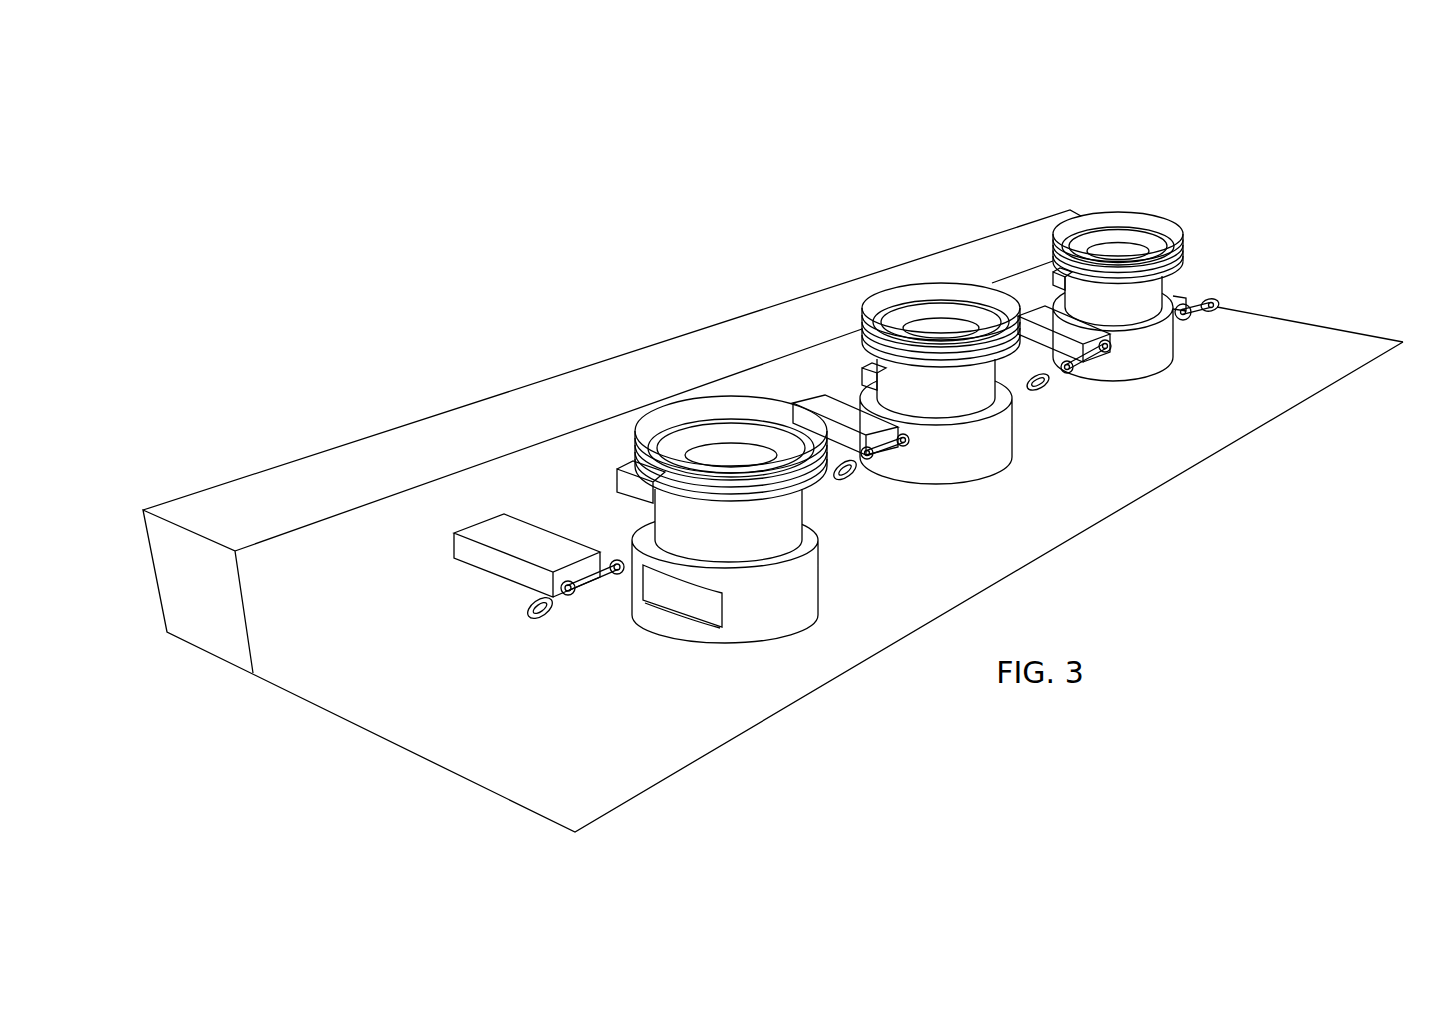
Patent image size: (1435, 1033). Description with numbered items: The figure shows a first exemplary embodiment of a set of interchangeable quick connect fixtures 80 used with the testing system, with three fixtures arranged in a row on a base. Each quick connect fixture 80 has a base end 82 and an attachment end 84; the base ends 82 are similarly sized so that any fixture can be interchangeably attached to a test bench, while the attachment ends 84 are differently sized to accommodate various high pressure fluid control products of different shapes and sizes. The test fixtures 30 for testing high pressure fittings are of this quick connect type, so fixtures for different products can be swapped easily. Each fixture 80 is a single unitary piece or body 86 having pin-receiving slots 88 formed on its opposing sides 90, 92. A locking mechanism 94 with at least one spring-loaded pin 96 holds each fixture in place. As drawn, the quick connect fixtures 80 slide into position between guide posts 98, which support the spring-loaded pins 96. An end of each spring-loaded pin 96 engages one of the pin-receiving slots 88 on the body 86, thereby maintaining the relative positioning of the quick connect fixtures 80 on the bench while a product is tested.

The interchangeable quick connect fixture 80 is at (896, 130).
The attachment end 84 is at (613, 385).
The test fixture for testing high pressure fittings 30 is at (679, 385).
The opposing side 92 is at (752, 380).
The base end 82 is at (682, 656).
The body 86 is at (732, 635).
The pin-receiving slot 88 is at (678, 615).
The opposing side 90 is at (598, 471).
The guide post 98 is at (500, 525).
The spring-loaded pin 96 is at (536, 602).
The locking mechanism 94 is at (512, 627).